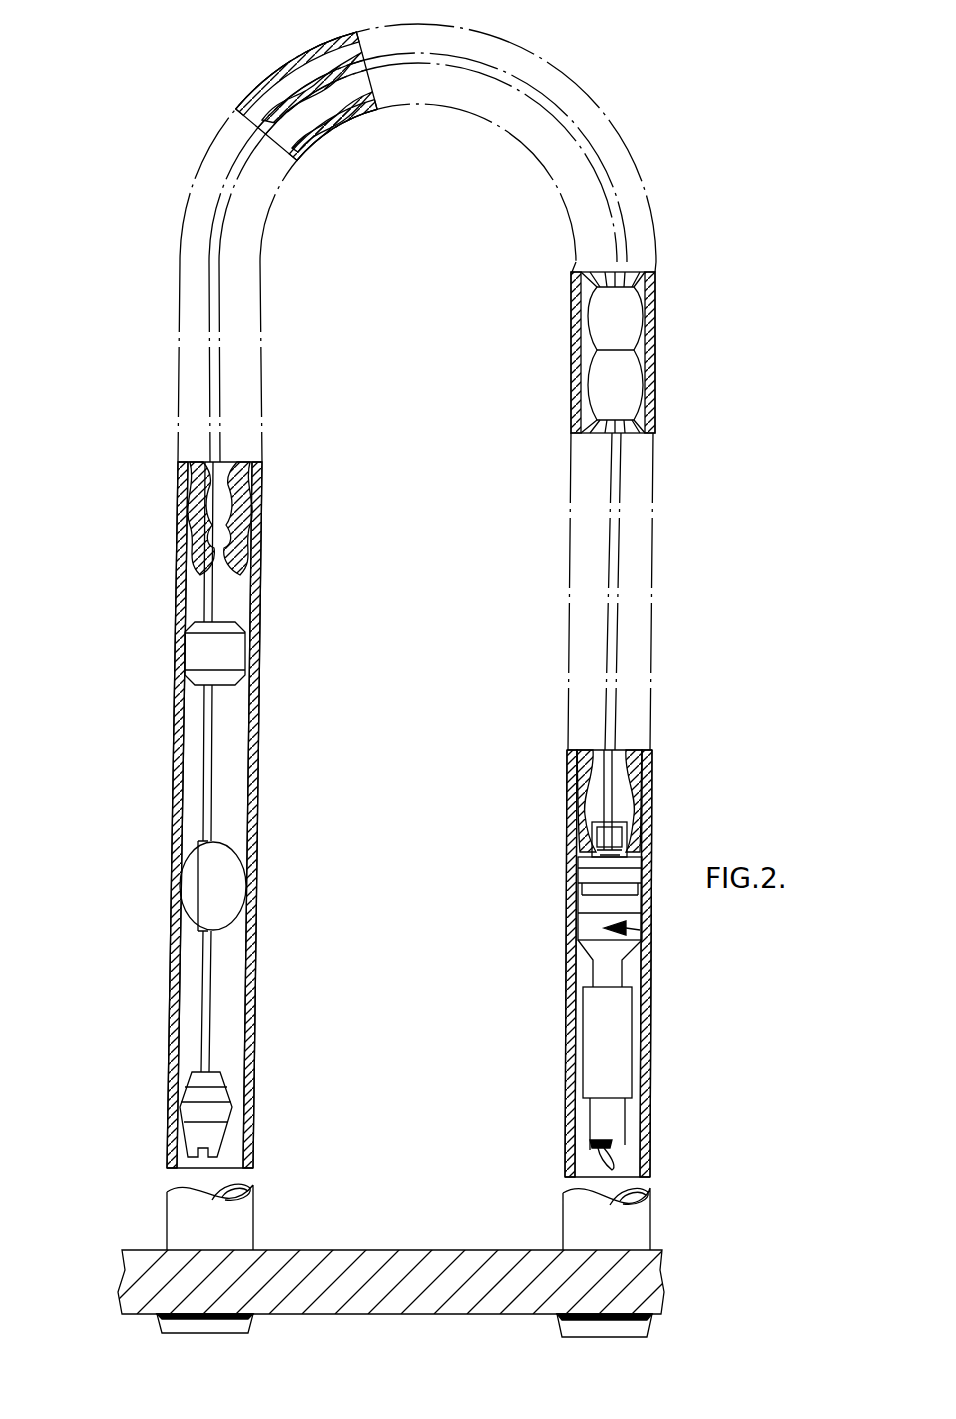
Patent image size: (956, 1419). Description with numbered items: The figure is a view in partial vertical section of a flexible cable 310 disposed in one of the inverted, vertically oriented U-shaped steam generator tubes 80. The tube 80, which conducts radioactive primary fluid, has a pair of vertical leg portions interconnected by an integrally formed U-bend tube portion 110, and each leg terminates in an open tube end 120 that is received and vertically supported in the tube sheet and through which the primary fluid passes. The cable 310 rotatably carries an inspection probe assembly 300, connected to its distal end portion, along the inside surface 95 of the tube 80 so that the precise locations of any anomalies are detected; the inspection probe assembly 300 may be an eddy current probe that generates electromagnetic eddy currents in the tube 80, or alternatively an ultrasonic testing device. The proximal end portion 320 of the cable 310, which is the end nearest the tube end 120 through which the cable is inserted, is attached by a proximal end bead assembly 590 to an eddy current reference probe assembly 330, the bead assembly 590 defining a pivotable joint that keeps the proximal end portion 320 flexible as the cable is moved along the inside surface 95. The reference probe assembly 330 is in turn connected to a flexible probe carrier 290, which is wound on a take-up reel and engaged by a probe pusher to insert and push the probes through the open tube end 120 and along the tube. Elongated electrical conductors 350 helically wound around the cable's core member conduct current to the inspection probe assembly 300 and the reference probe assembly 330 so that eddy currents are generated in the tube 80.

The U-bend tube portion 110 is at (622, 136).
The flexible cable 310 is at (286, 72).
The inside surface 95 is at (244, 100).
The U-shaped steam generator tube 80 is at (657, 292).
The proximal end portion 320 is at (650, 800).
The proximal end bead assembly 590 is at (597, 948).
The eddy current reference probe assembly 330 is at (640, 930).
The flexible probe carrier 290 is at (614, 1116).
The electrical conductors 350 is at (612, 1153).
The inspection probe assembly 300 is at (190, 880).
The open tube end 120 is at (175, 1337).